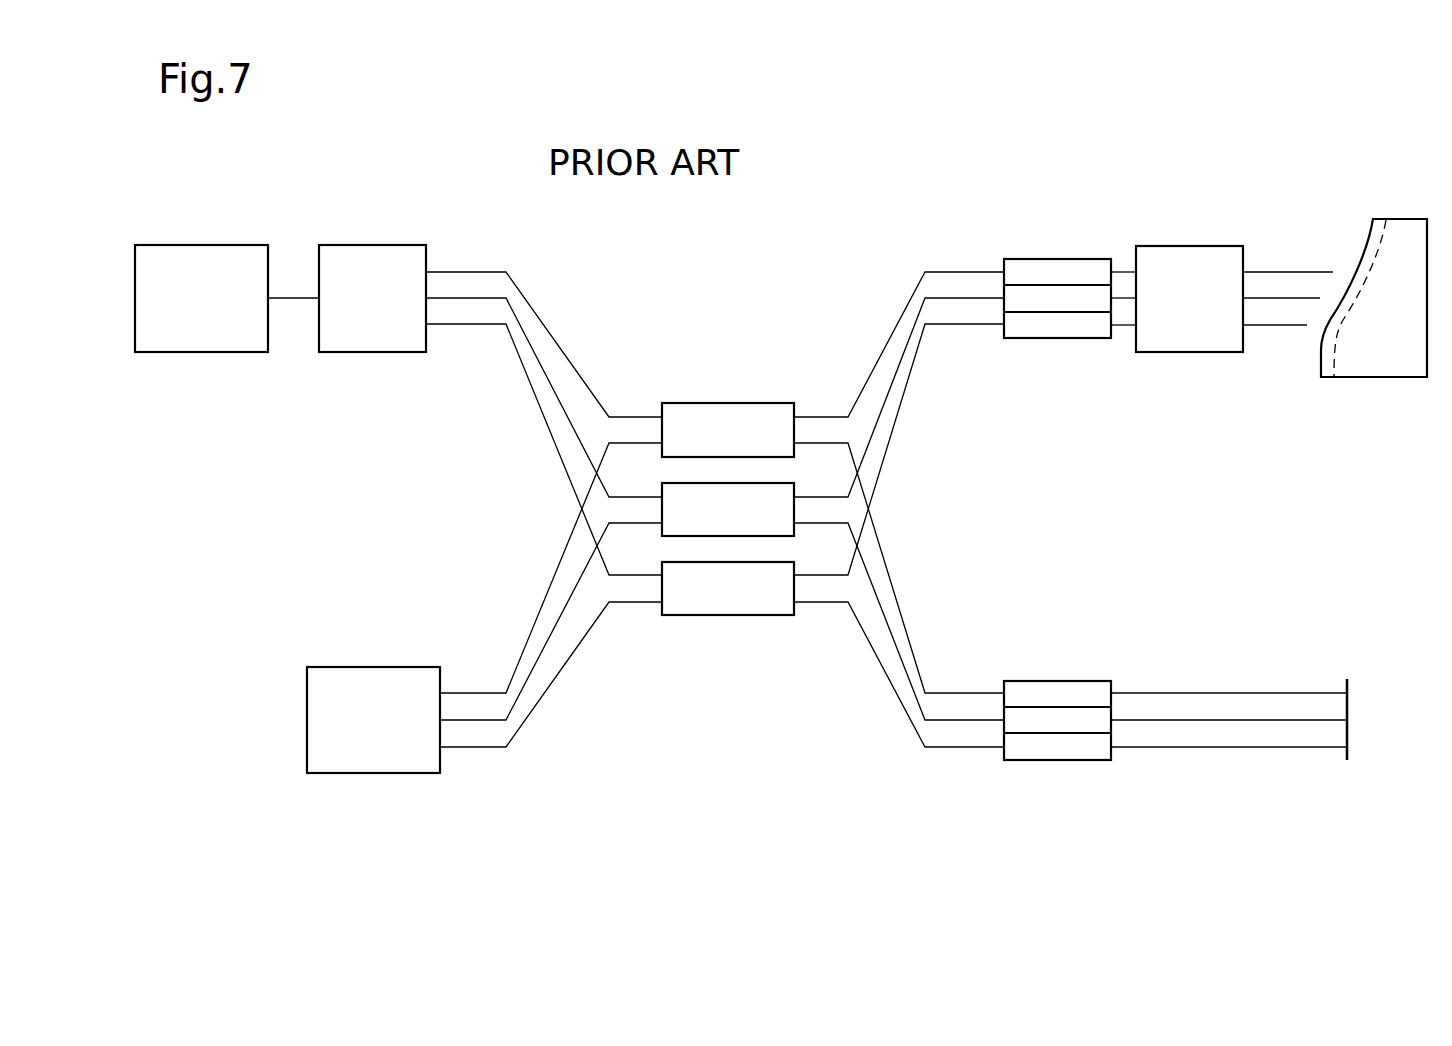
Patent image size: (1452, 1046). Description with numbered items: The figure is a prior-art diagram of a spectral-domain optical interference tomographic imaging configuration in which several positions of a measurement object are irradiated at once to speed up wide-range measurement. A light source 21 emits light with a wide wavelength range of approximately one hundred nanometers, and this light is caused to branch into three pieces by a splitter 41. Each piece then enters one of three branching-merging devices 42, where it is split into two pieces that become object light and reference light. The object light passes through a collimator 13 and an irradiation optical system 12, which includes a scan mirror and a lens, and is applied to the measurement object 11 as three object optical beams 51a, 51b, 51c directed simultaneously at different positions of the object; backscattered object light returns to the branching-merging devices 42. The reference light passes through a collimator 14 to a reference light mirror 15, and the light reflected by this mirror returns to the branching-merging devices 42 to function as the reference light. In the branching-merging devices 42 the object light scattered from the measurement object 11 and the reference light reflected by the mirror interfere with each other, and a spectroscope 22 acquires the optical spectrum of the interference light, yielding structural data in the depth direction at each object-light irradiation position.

The measurement object 11 is at (1400, 218).
The irradiation optical system 12 is at (1188, 246).
The collimator 13 is at (1058, 258).
The collimator 14 is at (1057, 762).
The reference light mirror 15 is at (1346, 755).
The light source 21 is at (217, 245).
The spectroscope 22 is at (372, 775).
The splitter 41 is at (373, 245).
The branching-merging device 42 is at (743, 403).
The object optical beam 51a is at (1320, 270).
The object optical beam 51b is at (1280, 296).
The object optical beam 51c is at (1254, 322).